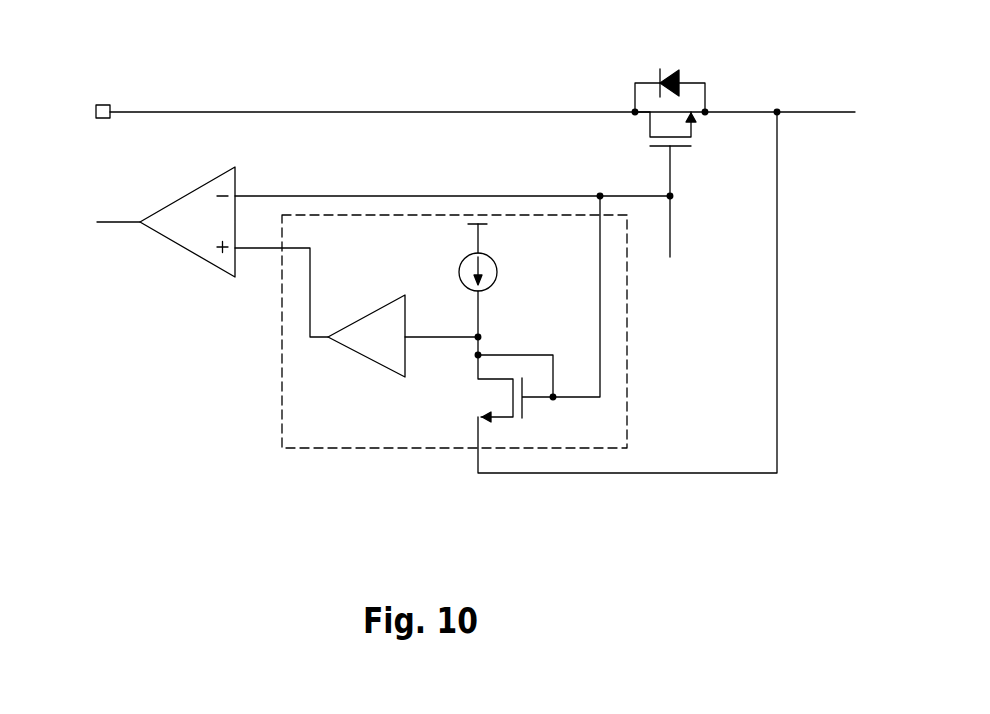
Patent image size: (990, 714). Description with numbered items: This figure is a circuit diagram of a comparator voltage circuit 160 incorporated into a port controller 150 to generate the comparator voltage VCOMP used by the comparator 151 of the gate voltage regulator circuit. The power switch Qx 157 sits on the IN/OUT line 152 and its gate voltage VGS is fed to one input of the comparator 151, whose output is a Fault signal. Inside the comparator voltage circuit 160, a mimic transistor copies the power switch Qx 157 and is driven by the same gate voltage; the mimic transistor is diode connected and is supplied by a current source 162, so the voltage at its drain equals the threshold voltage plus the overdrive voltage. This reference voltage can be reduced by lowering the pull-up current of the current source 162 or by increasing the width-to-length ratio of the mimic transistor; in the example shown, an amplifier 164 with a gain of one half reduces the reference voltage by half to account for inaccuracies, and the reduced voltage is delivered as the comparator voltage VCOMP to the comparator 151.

The port controller 150 is at (872, 61).
The comparator 151 is at (172, 252).
The IN/OUT bus line 152 is at (533, 110).
The transistor Qx with body diode 157 is at (671, 171).
The comparator voltage circuit 160 is at (281, 394).
The current source 162 is at (493, 255).
The amplifier AV=0.5 164 is at (365, 315).